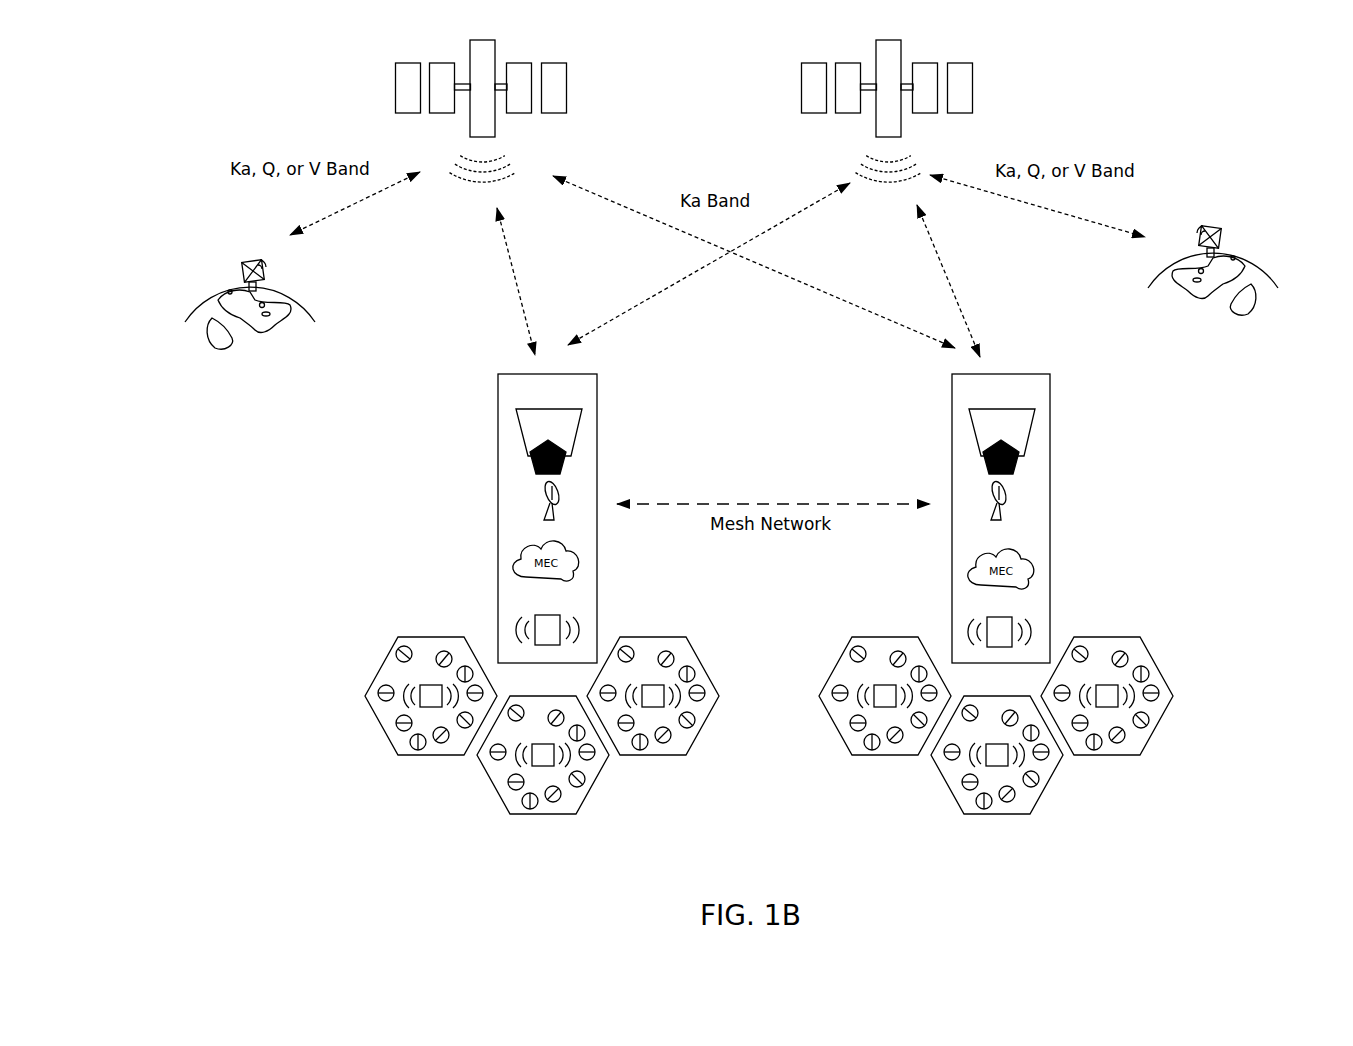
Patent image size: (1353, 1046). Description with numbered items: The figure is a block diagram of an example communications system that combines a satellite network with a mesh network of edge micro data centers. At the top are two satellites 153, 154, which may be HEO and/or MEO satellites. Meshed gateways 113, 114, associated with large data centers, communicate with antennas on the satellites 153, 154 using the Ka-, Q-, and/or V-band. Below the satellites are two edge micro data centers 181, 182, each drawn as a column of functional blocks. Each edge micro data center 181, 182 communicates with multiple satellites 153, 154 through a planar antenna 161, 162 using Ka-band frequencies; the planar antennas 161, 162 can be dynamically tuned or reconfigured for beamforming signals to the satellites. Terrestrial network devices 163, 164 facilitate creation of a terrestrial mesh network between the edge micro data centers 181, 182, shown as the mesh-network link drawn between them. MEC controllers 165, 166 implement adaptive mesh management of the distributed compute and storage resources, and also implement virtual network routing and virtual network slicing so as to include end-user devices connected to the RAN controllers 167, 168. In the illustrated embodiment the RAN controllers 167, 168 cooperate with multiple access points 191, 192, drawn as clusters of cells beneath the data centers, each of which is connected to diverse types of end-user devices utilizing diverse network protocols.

The satellite 153 is at (468, 38).
The satellite 154 is at (876, 42).
The meshed gateway 113 is at (243, 262).
The meshed gateway 114 is at (1225, 228).
The edge micro data center 181 is at (598, 380).
The edge micro data center 182 is at (950, 380).
The planar antenna 161 is at (518, 443).
The planar antenna 162 is at (1035, 444).
The terrestrial network device 163 is at (522, 506).
The terrestrial network device 164 is at (1028, 507).
The MEC controller 165 is at (516, 553).
The MEC controller 166 is at (1035, 553).
The RAN controller 167 is at (518, 621).
The RAN controller 168 is at (1035, 621).
The access points 191 is at (330, 691).
The access points 192 is at (1197, 688).